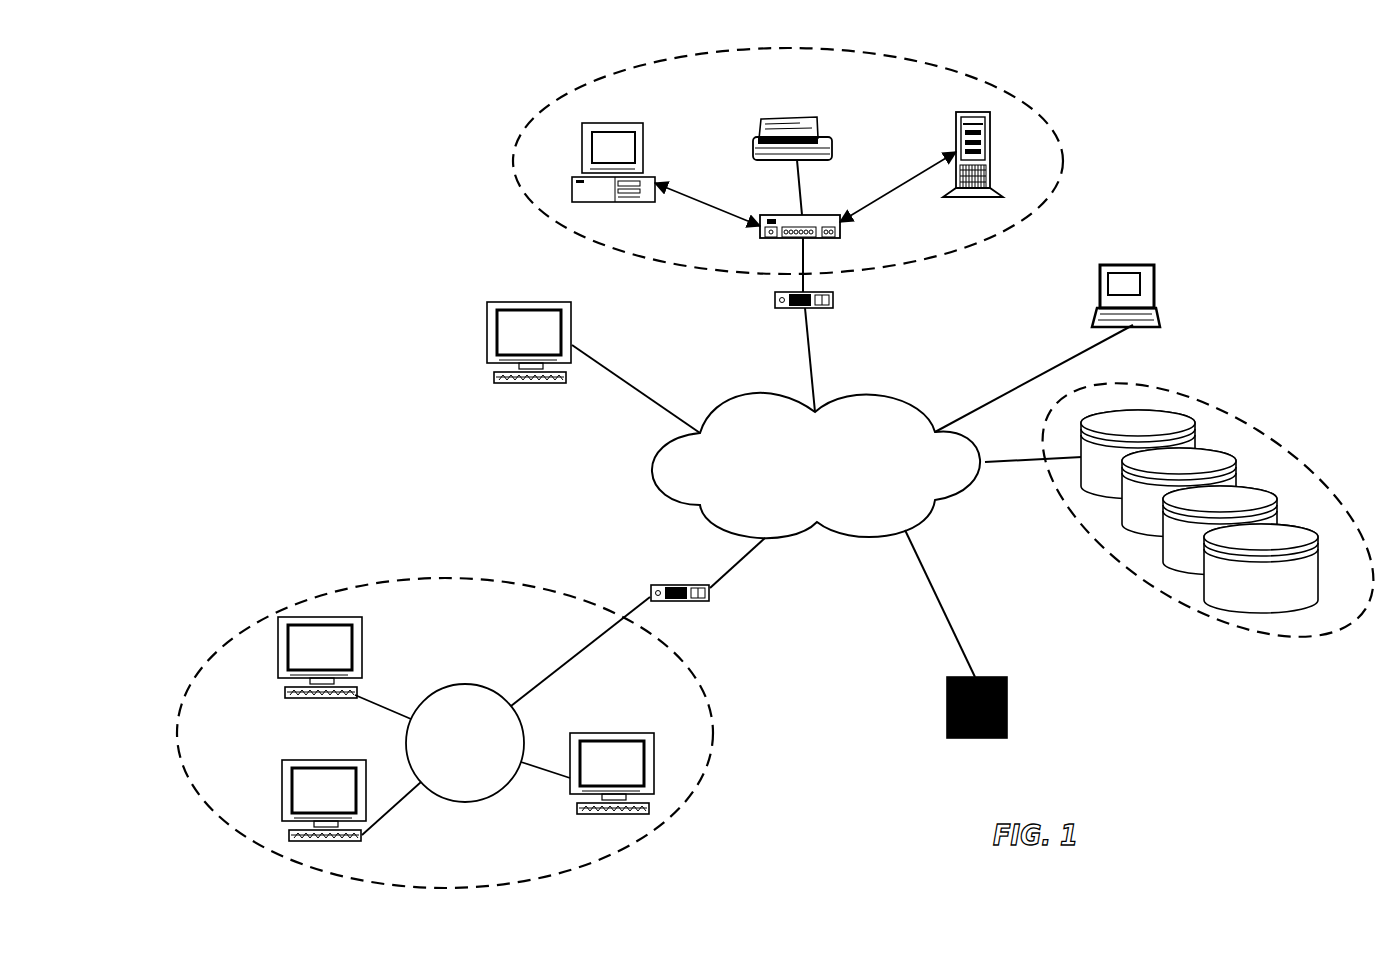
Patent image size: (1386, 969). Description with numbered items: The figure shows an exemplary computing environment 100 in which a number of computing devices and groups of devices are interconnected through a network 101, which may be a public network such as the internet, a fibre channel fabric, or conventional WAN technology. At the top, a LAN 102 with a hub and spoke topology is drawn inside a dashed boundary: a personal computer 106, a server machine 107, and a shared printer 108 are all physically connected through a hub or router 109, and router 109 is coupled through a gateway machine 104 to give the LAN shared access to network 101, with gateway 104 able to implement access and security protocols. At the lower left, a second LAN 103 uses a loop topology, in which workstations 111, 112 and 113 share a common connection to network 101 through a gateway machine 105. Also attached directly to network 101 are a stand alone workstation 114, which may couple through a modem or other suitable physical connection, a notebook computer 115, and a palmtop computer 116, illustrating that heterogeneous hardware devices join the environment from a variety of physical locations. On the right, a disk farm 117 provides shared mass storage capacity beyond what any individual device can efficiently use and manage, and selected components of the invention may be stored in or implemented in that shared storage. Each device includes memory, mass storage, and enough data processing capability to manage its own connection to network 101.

The computing environment 100 is at (370, 150).
The network 101 is at (668, 453).
The LAN 102 is at (531, 132).
The LAN 103 is at (455, 580).
The gateway machine 104 is at (787, 310).
The gateway machine 105 is at (668, 585).
The personal computer 106 is at (643, 123).
The server machine 107 is at (956, 113).
The printer 108 is at (790, 118).
The hub or router 109 is at (817, 212).
The workstation 111 is at (365, 632).
The workstation 112 is at (310, 760).
The workstation 113 is at (613, 733).
The stand alone workstation 114 is at (505, 305).
The notebook computer 115 is at (1125, 265).
The palmtop computer 116 is at (950, 678).
The disk farm 117 is at (1195, 395).